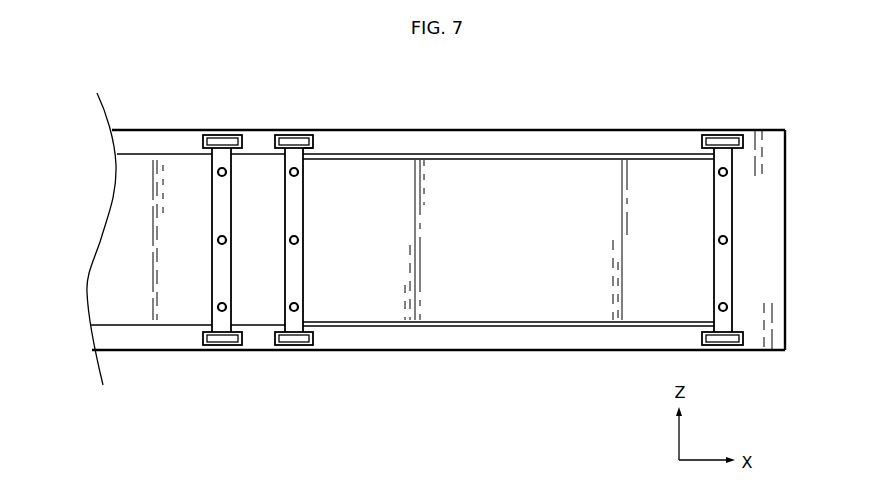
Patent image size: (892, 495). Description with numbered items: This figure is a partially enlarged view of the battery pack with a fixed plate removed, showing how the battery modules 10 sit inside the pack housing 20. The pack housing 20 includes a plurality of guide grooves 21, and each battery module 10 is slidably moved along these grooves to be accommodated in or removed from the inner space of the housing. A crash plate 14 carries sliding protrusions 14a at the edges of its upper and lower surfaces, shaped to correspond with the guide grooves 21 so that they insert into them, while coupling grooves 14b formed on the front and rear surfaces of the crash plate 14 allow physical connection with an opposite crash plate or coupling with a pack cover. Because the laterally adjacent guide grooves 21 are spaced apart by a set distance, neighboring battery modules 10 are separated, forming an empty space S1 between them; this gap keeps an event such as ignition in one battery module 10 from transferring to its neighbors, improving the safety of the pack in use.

The battery module 10 is at (510, 207).
The pack housing 20 is at (160, 130).
The guide groove 21 is at (297, 146).
The crash plate 14 is at (303, 273).
The sliding protrusion 14a is at (277, 139).
The coupling groove 14b is at (294, 312).
The empty space S1 is at (268, 261).